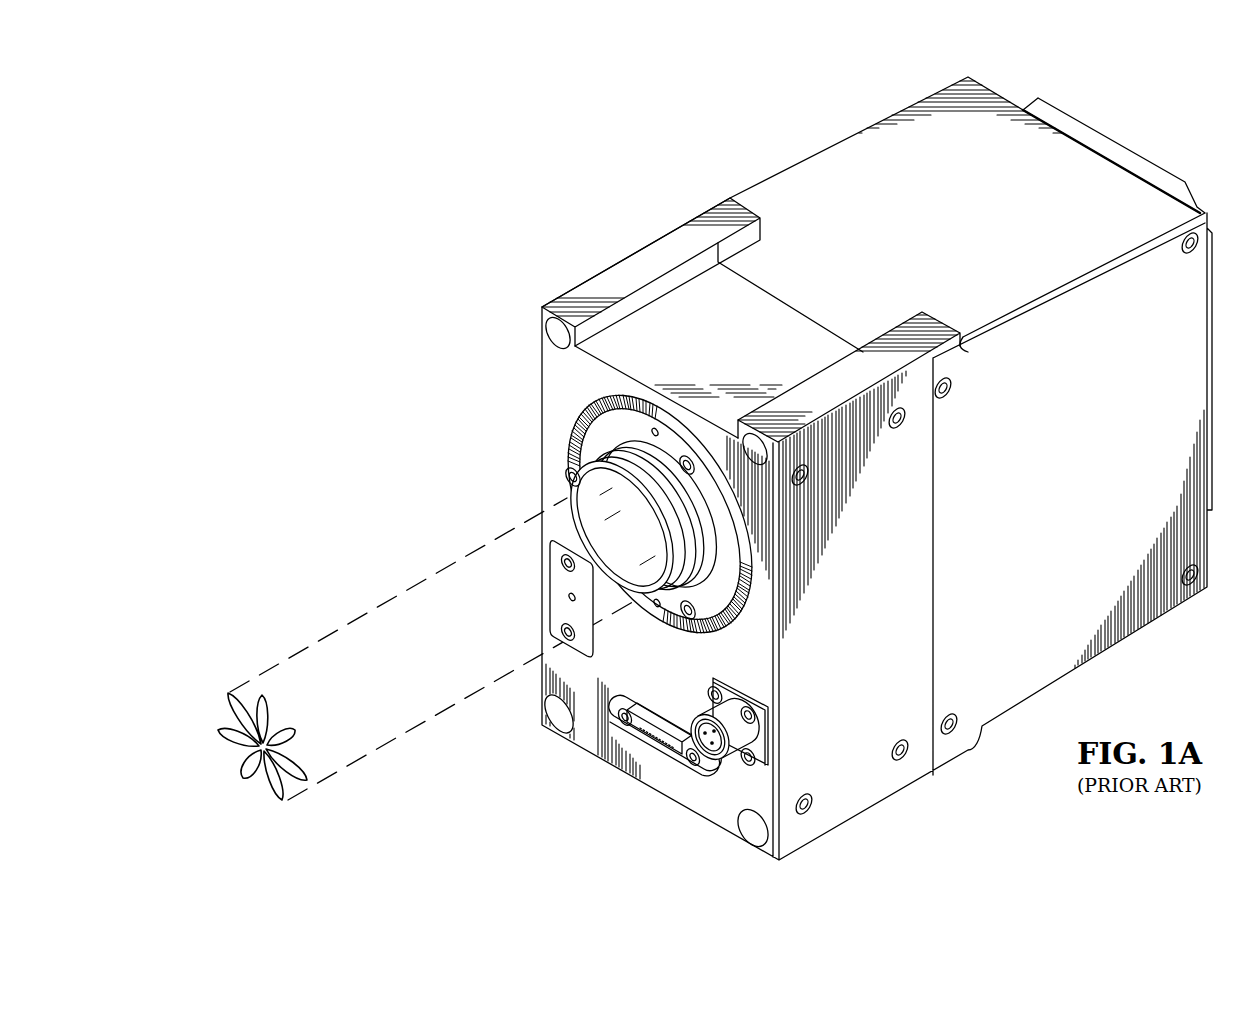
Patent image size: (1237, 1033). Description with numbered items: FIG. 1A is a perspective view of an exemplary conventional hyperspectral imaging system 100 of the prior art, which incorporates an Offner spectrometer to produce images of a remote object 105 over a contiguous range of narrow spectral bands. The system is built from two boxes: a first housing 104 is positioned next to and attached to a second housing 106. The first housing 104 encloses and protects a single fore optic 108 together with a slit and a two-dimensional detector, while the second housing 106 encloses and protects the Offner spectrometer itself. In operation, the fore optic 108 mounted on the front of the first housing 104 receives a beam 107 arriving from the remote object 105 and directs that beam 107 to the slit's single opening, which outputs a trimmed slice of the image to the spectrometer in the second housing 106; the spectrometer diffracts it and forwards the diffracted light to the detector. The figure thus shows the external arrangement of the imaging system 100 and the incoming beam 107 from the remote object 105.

The hyperspectral imaging system 100 is at (1148, 117).
The first housing 104 is at (613, 265).
The remote object 105 is at (250, 796).
The second housing 106 is at (864, 142).
The beam 107 is at (368, 613).
The fore optic 108 is at (575, 530).